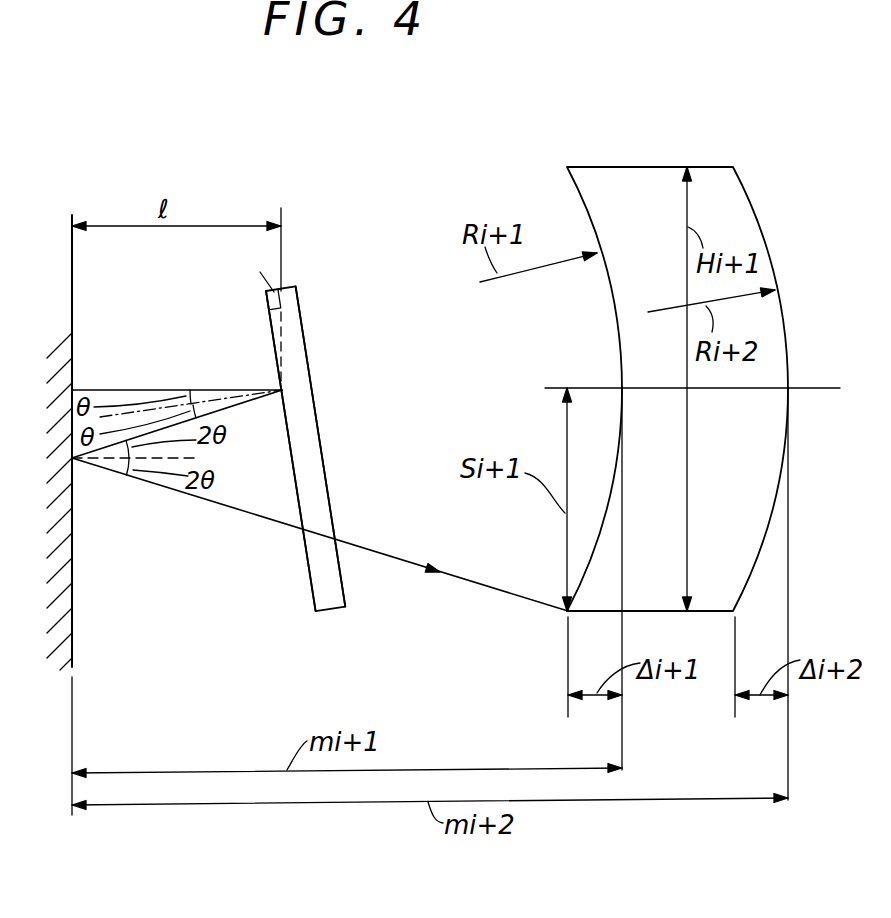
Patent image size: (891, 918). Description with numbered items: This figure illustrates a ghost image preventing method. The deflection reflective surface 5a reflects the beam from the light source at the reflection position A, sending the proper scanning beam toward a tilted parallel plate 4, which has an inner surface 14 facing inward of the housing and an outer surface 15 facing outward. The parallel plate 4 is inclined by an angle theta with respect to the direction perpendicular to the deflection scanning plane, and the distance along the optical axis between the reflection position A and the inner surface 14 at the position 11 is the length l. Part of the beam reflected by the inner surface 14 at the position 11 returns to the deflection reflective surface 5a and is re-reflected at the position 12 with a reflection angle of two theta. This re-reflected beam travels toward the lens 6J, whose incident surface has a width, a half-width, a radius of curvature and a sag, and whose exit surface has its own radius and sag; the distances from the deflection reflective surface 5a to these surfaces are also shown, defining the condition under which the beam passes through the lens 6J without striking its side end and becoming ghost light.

The parallel plate 4 is at (314, 402).
The deflection reflective surface 5a is at (73, 333).
The lens 6J is at (634, 167).
The position on inner surface 11 is at (279, 386).
The position on deflection reflective surface 12 is at (80, 468).
The inner surface 14 is at (291, 451).
The outer surface 15 is at (325, 467).
The reflection position A is at (76, 387).